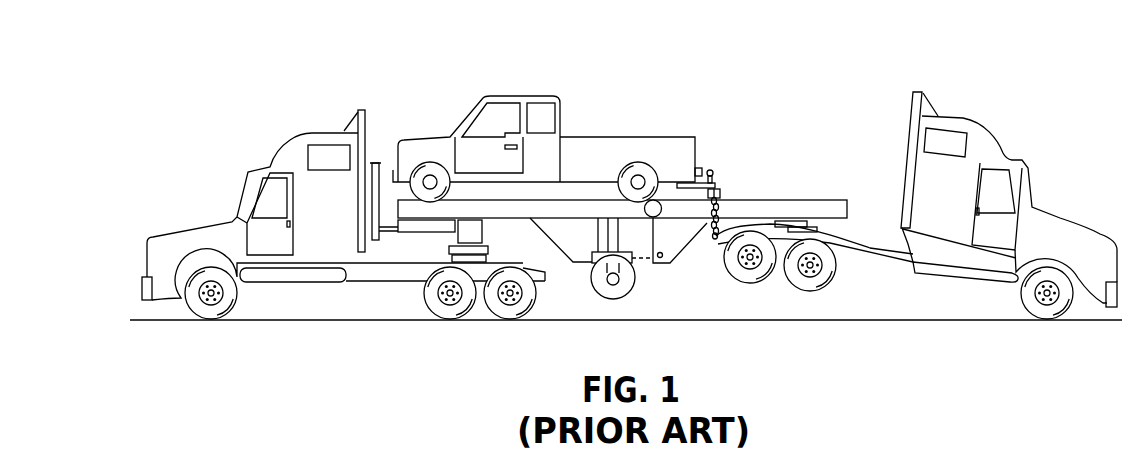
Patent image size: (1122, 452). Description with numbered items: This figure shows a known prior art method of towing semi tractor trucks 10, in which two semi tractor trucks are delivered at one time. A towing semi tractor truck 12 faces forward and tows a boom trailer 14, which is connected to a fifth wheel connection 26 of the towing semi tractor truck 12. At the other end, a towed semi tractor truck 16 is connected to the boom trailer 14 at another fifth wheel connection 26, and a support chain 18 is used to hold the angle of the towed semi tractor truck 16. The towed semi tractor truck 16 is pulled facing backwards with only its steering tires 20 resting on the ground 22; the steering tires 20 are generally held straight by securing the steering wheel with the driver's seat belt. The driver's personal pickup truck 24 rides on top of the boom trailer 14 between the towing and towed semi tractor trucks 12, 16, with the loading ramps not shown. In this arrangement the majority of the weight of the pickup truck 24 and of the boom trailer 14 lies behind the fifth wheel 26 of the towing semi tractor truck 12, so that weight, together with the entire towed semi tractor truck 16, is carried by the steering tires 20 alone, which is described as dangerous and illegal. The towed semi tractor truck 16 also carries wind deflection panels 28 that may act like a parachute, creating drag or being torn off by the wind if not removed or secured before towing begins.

The semi tractor trucks 10 is at (228, 92).
The towing semi tractor truck 12 is at (190, 229).
The boom trailer 14 is at (417, 235).
The towed semi tractor truck 16 is at (1031, 207).
The support chain 18 is at (721, 190).
The steering tires 20 is at (1036, 311).
The ground 22 is at (250, 361).
The pickup truck 24 is at (419, 138).
The fifth wheel connection 26 is at (485, 243).
The wind deflection panels 28 is at (913, 106).